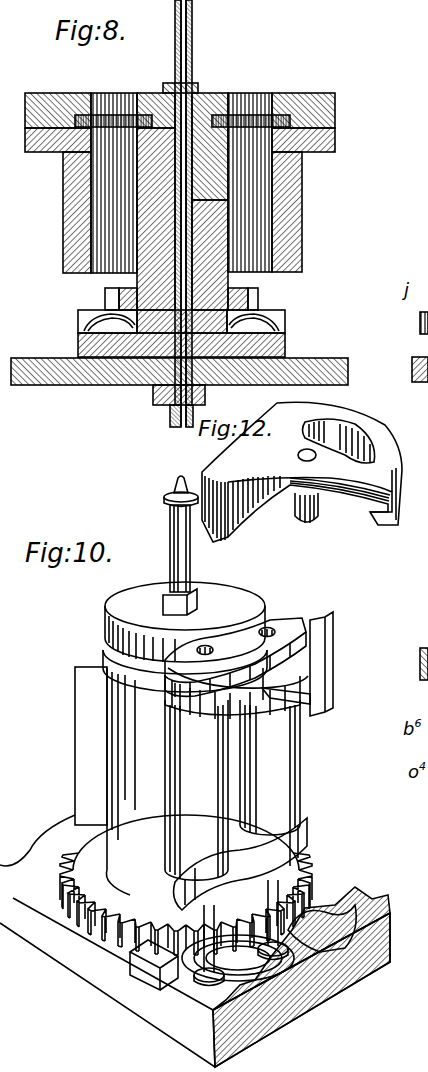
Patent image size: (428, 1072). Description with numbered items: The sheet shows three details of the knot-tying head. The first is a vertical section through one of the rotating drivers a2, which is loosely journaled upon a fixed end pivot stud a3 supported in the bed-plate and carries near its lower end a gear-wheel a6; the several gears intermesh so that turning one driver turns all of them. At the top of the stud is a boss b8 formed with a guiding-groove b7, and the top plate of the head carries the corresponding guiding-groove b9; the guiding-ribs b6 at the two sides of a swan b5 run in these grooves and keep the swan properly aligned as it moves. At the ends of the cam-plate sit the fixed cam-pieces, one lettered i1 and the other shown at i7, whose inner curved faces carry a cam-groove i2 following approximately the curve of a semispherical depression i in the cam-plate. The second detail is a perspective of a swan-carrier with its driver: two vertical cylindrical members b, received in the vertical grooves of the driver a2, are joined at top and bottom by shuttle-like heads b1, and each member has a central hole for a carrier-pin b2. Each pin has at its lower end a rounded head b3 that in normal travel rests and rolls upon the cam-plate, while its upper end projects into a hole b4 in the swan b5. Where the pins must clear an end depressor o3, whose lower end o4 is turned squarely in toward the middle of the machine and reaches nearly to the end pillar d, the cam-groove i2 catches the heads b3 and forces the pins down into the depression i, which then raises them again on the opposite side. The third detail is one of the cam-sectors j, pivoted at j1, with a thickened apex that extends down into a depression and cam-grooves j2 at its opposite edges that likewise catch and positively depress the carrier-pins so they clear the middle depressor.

In FIG. 8, the end pillar d is at (193, 22).
In FIG. 10, the end pillar d is at (170, 520).
In FIG. 8, the guiding-groove in the top plate of the head b9 is at (290, 105).
In FIG. 8, the boss upon the pivot-stud b8 is at (196, 96).
In FIG. 10, the boss upon the pivot-stud b8 is at (217, 583).
In FIG. 8, the guiding-groove in the boss b7 is at (222, 117).
In FIG. 10, the guiding-groove in the boss b7 is at (118, 643).
In FIG. 8, the gear-wheel a6 is at (258, 296).
In FIG. 10, the gear-wheel a6 is at (74, 872).
In FIG. 8, the cam-groove i2 is at (82, 324).
In FIG. 8, the cam segment i7 is at (283, 320).
In FIG. 8, the end pivot stud a3 is at (170, 418).
In FIG. 12, the cam-sector j is at (302, 472).
In FIG. 12, the pivot of the cam-sector j1 is at (308, 455).
In FIG. 12, the cam-groove of the cam-sector j2 is at (353, 498).
In FIG. 10, the rotating driver a2 is at (98, 748).
In FIG. 10, the vertical cylindrical member of the swan-carrier b is at (197, 805).
In FIG. 10, the shuttle-like head b1 is at (302, 848).
In FIG. 10, the carrier-pin b2 is at (322, 902).
In FIG. 10, the rounded head b3 is at (292, 946).
In FIG. 10, the hole in the swan b4 is at (210, 647).
In FIG. 10, the swan b5 is at (235, 657).
In FIG. 10, the guiding-rib b6 is at (227, 697).
In FIG. 10, the end depressor o3 is at (334, 648).
In FIG. 10, the in-turned lower end of the end depressor o4 is at (295, 699).
In FIG. 10, the semispherical depression i is at (238, 958).
In FIG. 10, the fixed cam-piece i1 is at (355, 900).